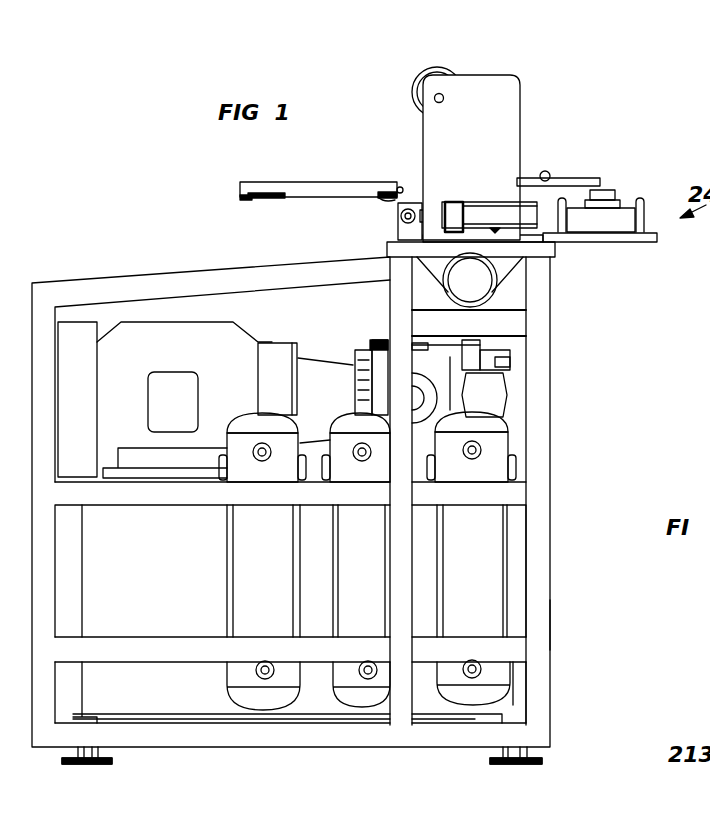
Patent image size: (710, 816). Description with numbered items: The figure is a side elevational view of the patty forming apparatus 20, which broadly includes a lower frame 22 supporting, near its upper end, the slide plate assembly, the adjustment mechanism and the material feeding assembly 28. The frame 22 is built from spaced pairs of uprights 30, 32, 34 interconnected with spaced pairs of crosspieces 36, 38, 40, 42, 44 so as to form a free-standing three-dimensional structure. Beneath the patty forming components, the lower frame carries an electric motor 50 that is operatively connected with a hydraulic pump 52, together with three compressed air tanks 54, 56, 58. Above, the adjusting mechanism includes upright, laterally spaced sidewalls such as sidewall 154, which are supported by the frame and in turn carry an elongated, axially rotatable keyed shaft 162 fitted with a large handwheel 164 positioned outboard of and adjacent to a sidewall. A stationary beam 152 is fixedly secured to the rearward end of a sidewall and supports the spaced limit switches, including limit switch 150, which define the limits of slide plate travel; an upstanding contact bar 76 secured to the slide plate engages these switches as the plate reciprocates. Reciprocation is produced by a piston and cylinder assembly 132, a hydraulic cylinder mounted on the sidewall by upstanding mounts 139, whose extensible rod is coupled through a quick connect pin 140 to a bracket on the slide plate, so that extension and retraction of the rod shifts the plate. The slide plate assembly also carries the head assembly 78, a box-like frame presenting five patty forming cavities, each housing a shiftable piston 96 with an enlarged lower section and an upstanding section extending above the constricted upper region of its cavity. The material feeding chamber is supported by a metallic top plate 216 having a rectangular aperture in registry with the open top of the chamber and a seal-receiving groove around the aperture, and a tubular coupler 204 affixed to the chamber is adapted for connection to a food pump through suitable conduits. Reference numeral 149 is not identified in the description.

The patty forming apparatus 20 is at (606, 85).
The lower frame 22 is at (562, 517).
The material feeding assembly 28 is at (425, 301).
The upright 30 is at (43, 608).
The upright 32 is at (398, 708).
The upright 34 is at (535, 625).
The crosspiece 36 is at (184, 733).
The crosspiece 38 is at (100, 647).
The crosspiece 40 is at (162, 493).
The crosspiece 42 is at (495, 325).
The crosspiece 44 is at (152, 287).
The electric motor 50 is at (260, 350).
The hydraulic pump 52 is at (465, 362).
The compressed air tank 54 is at (292, 546).
The compressed air tank 56 is at (392, 546).
The compressed air tank 58 is at (502, 546).
The contact bar 76 is at (398, 217).
The head assembly 78 is at (630, 193).
The piston 96 is at (604, 178).
The piston and cylinder assembly 132 is at (480, 213).
The upstanding mount 139 is at (432, 203).
The quick connect pin 140 is at (397, 183).
The pad 149 is at (250, 199).
The limit switch 150 is at (378, 196).
The stationary beam 152 is at (330, 188).
The sidewall 154 is at (477, 137).
The keyed shaft 162 is at (445, 94).
The handwheel 164 is at (434, 70).
The tubular coupler 204 is at (498, 293).
The top plate 216 is at (386, 249).